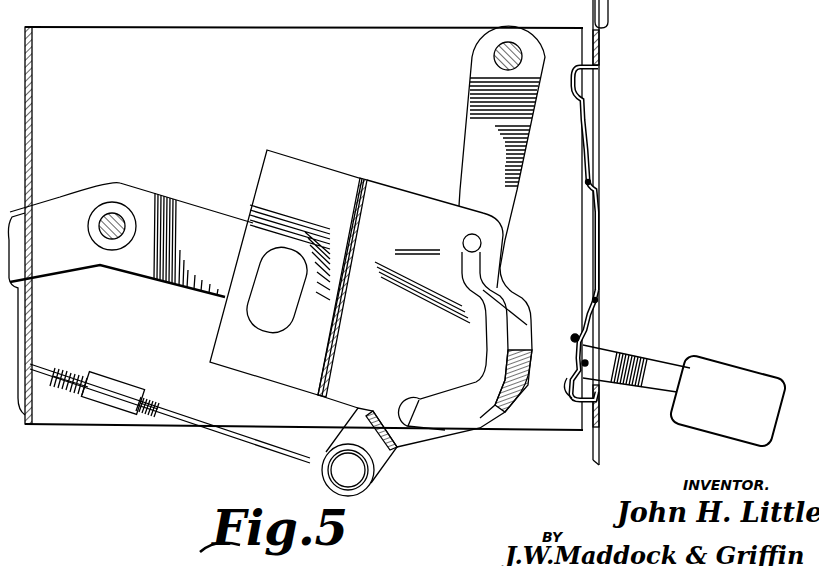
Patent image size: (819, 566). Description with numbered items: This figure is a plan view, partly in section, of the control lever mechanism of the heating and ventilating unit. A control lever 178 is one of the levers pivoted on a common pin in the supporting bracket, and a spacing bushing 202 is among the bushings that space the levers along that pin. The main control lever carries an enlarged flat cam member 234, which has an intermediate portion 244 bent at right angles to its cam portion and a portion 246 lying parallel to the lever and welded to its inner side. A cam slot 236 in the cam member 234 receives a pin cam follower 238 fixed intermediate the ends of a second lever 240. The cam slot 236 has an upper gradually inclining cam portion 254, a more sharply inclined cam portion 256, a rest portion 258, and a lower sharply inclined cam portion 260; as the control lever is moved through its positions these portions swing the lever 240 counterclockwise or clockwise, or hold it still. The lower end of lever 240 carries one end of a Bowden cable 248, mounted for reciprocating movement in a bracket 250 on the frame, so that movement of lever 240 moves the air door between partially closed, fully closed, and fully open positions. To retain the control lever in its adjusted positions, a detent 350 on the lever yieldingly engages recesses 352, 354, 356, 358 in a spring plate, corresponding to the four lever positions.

The control lever 178 is at (68, 191).
The spacing bushing 202 is at (118, 222).
The portion of cam member 246 is at (256, 195).
The intermediate portion of cam member 244 is at (354, 186).
The second lever 240 is at (462, 138).
The enlarged flat member (cam member) 234 is at (410, 208).
The upper gradually inclining cam portion 254 is at (458, 258).
The pin cam follower 238 is at (481, 243).
The more sharply inclined cam portion 256 is at (490, 293).
The cam slot 236 is at (485, 349).
The rest portion 258 is at (482, 360).
The lower sharply inclined cam portion 260 is at (438, 416).
The Bowden cable 248 is at (250, 442).
The bracket 250 is at (120, 383).
The recess 352 is at (590, 345).
The detent 350 is at (580, 372).
The recess 354 is at (602, 312).
The recess 356 is at (590, 183).
The recess 358 is at (614, 178).